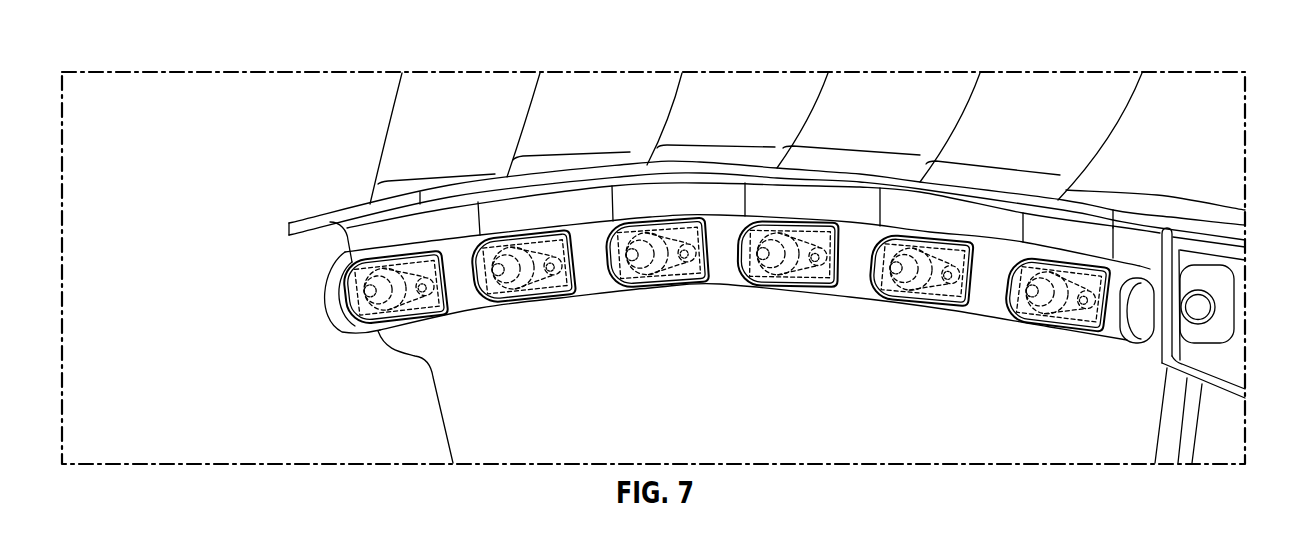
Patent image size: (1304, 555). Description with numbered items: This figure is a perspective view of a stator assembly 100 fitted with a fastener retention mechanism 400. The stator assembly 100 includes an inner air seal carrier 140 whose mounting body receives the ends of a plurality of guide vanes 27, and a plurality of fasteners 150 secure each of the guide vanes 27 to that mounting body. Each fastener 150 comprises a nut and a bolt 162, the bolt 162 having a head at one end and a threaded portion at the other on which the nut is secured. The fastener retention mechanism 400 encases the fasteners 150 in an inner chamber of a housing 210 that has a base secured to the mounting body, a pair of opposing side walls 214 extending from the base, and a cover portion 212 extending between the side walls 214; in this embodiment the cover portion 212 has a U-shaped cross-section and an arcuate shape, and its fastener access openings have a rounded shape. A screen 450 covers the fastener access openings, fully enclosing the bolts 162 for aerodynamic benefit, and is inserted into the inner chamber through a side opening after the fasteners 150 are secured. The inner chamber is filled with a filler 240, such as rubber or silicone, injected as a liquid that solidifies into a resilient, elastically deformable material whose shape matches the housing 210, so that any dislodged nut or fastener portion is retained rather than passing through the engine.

The stator assembly 100 is at (381, 56).
The guide vanes 27 is at (902, 88).
The housing 210 is at (584, 247).
The cover portion 212 is at (727, 270).
The side walls 214 is at (1142, 265).
The filler 240 is at (1130, 345).
The inner air seal carrier 140 is at (1013, 433).
The fasteners 150 is at (362, 310).
The bolt 162 is at (361, 291).
The fastener retention mechanism 400 is at (691, 285).
The screen 450 is at (812, 277).